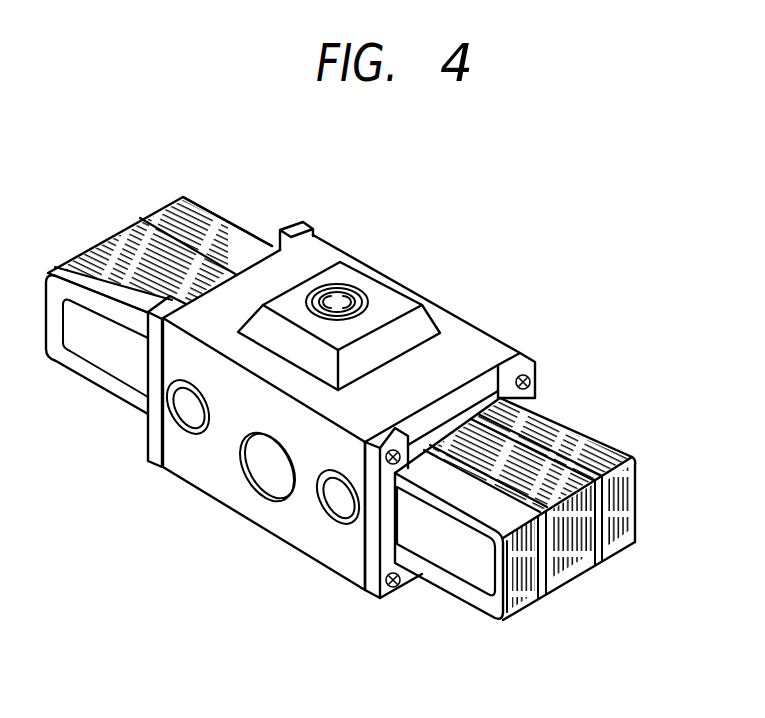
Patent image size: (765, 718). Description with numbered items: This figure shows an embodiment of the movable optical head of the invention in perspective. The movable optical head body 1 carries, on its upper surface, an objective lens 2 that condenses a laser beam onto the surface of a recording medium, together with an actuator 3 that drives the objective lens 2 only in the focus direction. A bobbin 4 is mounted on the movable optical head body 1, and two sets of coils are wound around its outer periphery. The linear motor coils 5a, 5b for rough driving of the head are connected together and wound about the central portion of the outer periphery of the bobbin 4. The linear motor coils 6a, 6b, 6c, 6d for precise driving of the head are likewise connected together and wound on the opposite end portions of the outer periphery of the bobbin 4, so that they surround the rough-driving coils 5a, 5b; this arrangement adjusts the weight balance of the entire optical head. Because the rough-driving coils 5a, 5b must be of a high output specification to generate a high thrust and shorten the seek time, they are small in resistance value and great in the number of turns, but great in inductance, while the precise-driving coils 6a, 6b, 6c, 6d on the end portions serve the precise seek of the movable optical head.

The movable optical head body 1 is at (458, 337).
The objective lens 2 is at (338, 300).
The actuator 3 is at (393, 306).
The bobbin 4 is at (190, 205).
The linear motor coil for rough driving 5a is at (573, 568).
The linear motor coil for rough driving 5b is at (137, 222).
The linear motor coil for precise driving 6a is at (531, 597).
The linear motor coil for precise driving 6b is at (566, 447).
The linear motor coil for precise driving 6c is at (81, 257).
The linear motor coil for precise driving 6d is at (242, 258).